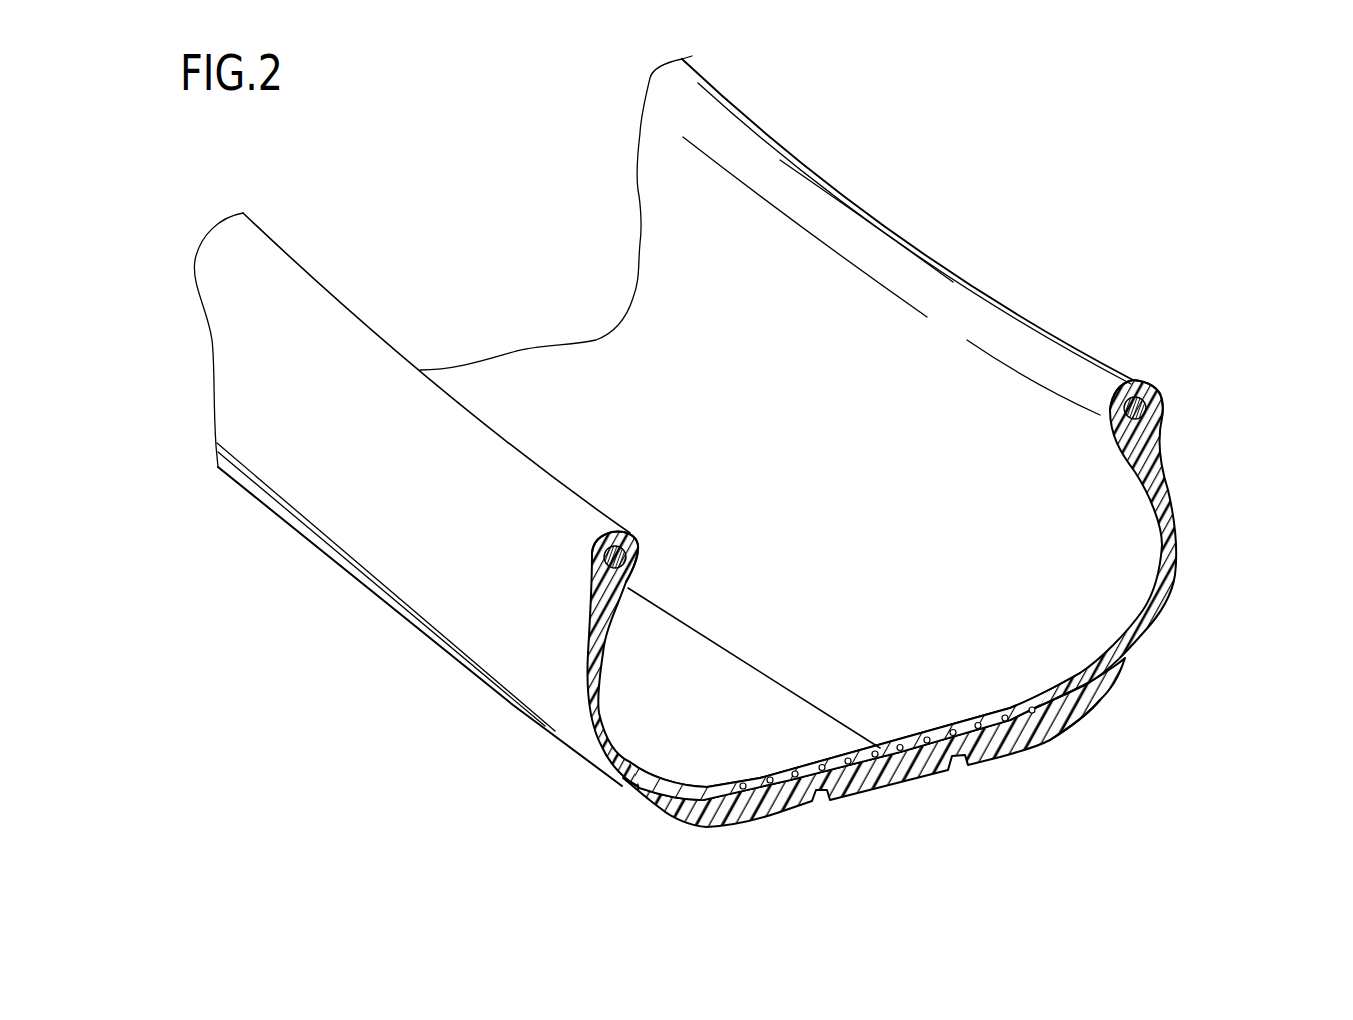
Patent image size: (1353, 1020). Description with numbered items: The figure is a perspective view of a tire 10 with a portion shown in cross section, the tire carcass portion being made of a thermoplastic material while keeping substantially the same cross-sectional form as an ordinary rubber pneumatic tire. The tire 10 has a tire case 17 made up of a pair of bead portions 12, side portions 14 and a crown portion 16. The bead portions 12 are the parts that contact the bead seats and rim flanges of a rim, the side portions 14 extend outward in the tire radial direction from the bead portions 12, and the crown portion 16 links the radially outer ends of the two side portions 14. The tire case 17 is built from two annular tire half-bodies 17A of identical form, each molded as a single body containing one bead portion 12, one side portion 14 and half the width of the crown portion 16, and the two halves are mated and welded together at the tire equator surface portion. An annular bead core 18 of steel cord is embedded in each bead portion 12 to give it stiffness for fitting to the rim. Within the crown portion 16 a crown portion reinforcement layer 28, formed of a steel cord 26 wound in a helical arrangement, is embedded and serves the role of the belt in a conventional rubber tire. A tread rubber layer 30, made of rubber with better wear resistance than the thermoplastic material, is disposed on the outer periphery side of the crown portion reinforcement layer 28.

The tire 10 is at (966, 196).
The bead portion 12 is at (578, 501).
The side portion 14 is at (527, 645).
The crown portion 16 is at (1000, 732).
The tire case 17 is at (703, 601).
The tire half-body 17A is at (718, 678).
The bead core 18 is at (641, 553).
The cord 26 is at (795, 780).
The crown portion reinforcement layer 28 is at (856, 768).
The tread rubber layer 30 is at (1067, 732).